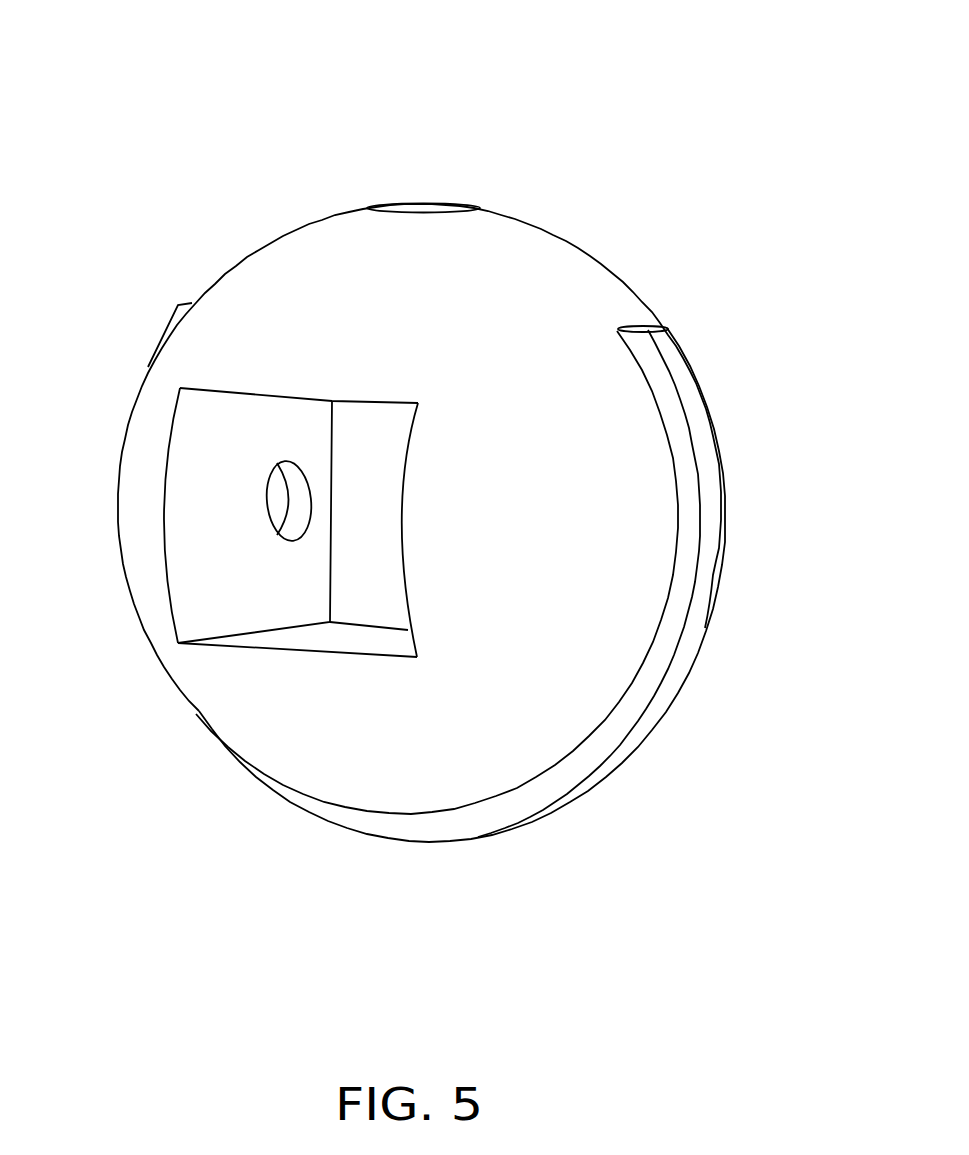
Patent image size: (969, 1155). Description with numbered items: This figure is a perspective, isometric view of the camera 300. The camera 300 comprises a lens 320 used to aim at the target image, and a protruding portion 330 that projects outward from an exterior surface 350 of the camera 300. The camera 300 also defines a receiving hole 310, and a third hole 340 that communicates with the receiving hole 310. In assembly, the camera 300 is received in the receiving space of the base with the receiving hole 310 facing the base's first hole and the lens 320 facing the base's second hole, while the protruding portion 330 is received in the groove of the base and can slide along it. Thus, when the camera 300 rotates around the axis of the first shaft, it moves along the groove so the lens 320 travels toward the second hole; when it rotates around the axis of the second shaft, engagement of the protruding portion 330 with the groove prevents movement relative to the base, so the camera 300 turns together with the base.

The camera 300 is at (290, 61).
The receiving hole 310 is at (421, 481).
The lens 320 is at (425, 207).
The protruding portion 330 is at (698, 440).
The third hole 340 is at (276, 494).
The exterior surface 350 is at (528, 390).